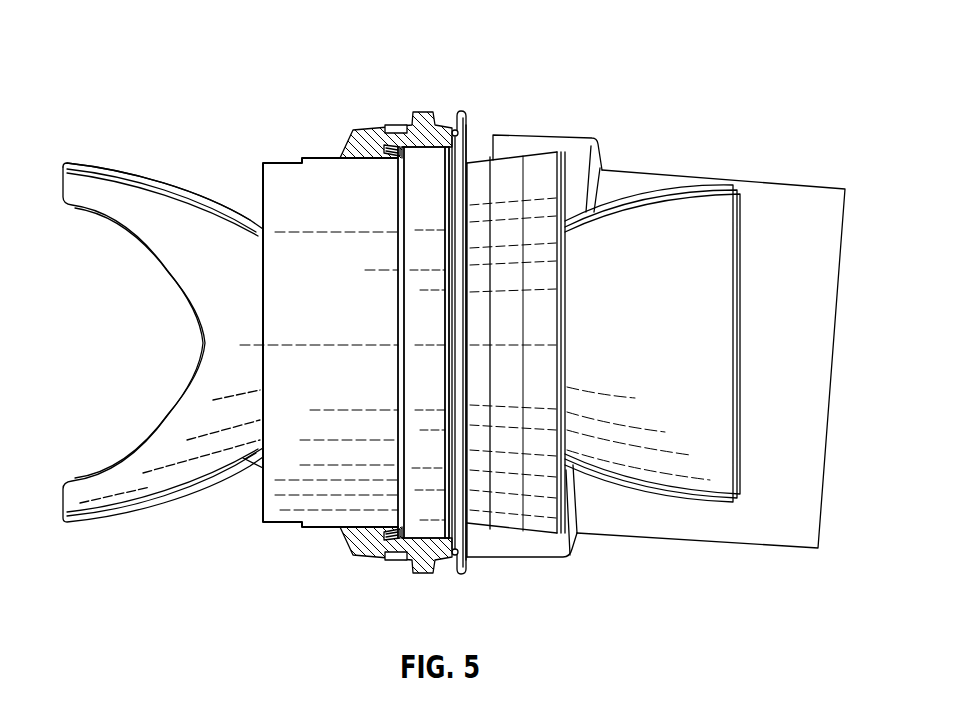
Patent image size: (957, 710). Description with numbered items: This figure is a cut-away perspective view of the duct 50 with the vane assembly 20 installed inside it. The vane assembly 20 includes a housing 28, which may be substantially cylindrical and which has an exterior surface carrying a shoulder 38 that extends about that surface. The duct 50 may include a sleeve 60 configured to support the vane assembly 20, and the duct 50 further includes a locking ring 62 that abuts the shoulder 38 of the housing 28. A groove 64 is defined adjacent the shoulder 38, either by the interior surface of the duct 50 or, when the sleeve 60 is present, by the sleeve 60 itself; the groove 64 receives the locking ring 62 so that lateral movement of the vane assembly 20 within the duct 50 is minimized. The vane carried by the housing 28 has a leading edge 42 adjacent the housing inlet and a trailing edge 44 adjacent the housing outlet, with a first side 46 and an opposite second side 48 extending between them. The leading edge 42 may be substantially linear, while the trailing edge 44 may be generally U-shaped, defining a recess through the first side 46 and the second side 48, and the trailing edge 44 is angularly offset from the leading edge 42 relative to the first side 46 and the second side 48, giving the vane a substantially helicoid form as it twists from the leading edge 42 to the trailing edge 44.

The vane assembly 20 is at (537, 537).
The housing 28 is at (298, 487).
The shoulder 38 is at (422, 233).
The leading edge 42 is at (740, 362).
The trailing edge 44 is at (104, 478).
The first side 46 is at (703, 292).
The second side 48 is at (160, 207).
The duct 50 is at (530, 114).
The sleeve 60 is at (417, 113).
The locking ring 62 is at (447, 273).
The groove 64 is at (459, 130).